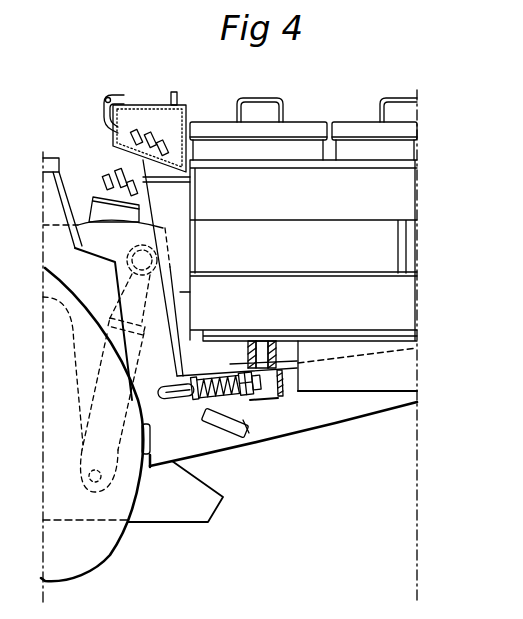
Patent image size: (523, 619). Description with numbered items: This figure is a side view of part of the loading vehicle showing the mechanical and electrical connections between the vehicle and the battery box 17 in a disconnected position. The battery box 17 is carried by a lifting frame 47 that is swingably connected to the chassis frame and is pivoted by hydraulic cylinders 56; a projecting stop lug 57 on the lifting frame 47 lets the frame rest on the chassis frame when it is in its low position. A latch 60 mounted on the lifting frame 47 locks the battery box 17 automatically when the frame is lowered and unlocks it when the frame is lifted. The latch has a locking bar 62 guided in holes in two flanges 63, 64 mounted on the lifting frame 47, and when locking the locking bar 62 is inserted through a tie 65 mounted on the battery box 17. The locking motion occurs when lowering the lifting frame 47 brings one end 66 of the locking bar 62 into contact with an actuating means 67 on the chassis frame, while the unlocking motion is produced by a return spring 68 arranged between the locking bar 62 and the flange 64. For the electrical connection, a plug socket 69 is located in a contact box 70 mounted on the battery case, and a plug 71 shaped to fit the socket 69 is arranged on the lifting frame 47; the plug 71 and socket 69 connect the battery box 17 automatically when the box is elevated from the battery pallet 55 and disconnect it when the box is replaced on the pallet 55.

The battery box 17 is at (297, 176).
The lifting frame 47 is at (323, 429).
The battery pallet 55 is at (380, 381).
The hydraulic cylinders 56 is at (139, 522).
The stop lug 57 is at (247, 435).
The latch 60 is at (256, 416).
The locking bar 62 is at (212, 408).
The flange 63 is at (193, 402).
The flange 64 is at (257, 399).
The tie 65 is at (281, 370).
The end of the locking bar 66 is at (161, 402).
The actuating means 67 is at (152, 468).
The return spring 68 is at (223, 384).
The plug socket 69 is at (146, 134).
The contact box 70 is at (119, 131).
The plug 71 is at (118, 188).